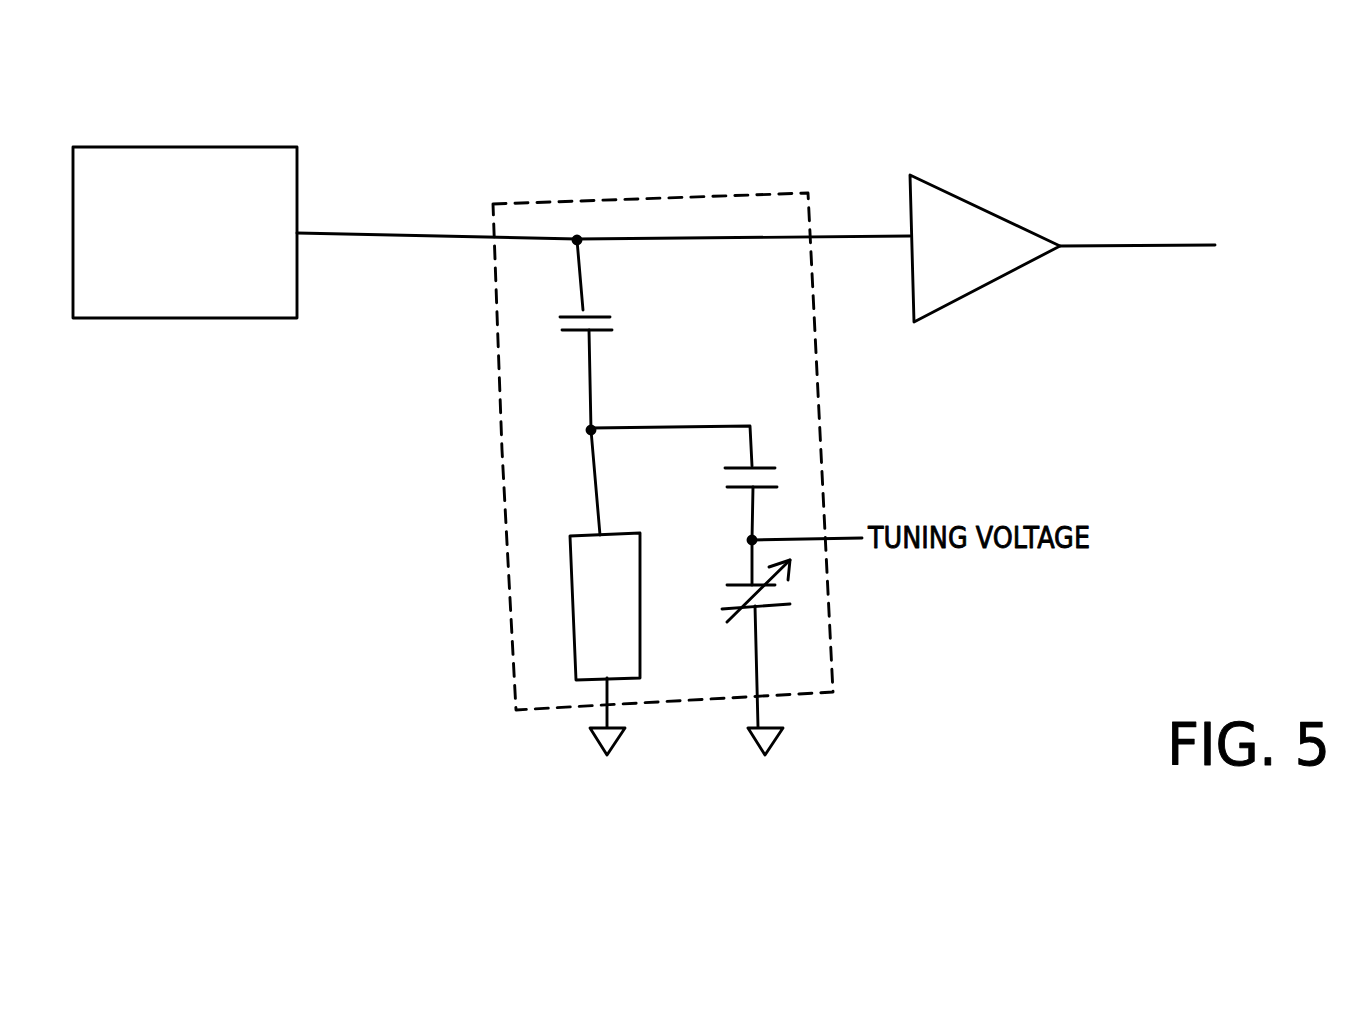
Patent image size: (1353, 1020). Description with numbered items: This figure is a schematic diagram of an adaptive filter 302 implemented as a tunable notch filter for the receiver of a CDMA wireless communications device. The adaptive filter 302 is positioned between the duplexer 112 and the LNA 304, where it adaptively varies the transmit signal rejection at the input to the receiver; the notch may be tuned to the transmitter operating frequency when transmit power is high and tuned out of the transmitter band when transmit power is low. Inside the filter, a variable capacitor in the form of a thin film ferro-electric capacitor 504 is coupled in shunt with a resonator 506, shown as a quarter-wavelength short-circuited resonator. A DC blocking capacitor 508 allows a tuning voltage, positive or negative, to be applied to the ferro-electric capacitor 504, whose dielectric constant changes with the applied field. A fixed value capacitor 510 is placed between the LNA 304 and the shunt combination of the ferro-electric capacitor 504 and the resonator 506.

The duplexer 112 is at (182, 325).
The adaptive filter 302 is at (515, 684).
The LNA 304 is at (963, 304).
The thin film ferro-electric capacitor 504 is at (770, 606).
The resonator 506 is at (640, 553).
The DC blocking capacitor 508 is at (755, 462).
The fixed value capacitor 510 is at (602, 313).